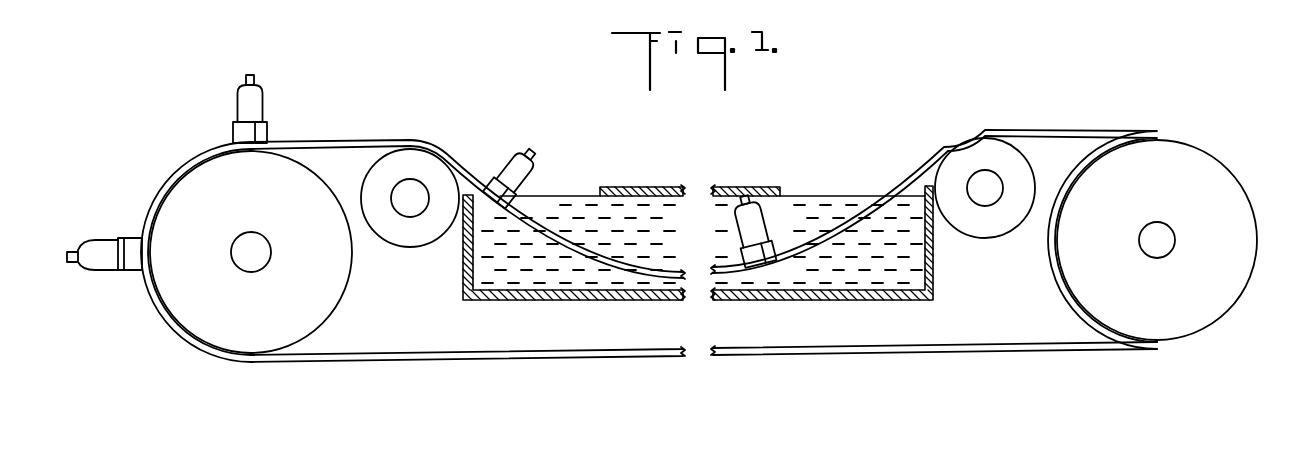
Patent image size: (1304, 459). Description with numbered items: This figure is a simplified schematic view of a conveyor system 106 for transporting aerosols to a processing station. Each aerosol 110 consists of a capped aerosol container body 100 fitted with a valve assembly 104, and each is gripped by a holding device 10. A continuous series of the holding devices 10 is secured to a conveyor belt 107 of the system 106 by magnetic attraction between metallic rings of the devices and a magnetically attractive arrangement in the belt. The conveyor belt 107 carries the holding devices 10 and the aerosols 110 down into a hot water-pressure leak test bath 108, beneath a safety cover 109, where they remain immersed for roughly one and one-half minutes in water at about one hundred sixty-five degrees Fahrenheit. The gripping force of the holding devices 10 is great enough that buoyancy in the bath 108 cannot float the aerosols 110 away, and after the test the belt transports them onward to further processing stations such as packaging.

The holding device 10 is at (265, 125).
The aerosol container body 100 is at (524, 182).
The valve assembly 104 is at (540, 150).
The conveyor system 106 is at (864, 359).
The conveyor belt 107 is at (569, 360).
The hot water-pressure leak test bath 108 is at (903, 298).
The safety cover 109 is at (752, 184).
The aerosol 110 is at (520, 148).